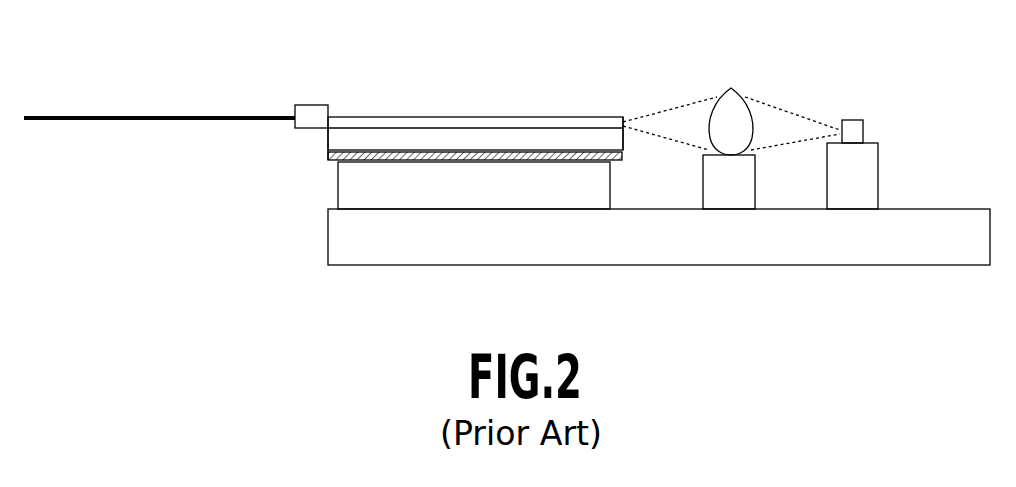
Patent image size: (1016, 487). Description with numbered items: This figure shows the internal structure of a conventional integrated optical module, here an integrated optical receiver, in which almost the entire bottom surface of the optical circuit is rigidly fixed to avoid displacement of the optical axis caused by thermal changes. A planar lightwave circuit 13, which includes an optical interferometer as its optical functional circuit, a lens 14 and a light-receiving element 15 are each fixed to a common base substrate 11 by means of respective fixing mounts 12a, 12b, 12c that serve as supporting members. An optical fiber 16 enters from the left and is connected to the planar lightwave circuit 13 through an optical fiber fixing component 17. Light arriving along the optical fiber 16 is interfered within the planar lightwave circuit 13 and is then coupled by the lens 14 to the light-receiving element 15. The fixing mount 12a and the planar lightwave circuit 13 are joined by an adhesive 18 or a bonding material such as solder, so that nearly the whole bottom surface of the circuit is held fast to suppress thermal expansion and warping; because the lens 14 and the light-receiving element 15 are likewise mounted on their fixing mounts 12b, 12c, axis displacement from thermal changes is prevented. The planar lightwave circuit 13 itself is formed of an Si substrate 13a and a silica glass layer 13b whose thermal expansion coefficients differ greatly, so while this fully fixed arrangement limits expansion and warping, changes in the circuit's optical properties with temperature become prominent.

The base substrate 11 is at (957, 209).
The fixing mount 12a is at (335, 193).
The fixing mount 12b is at (732, 187).
The fixing mount 12c is at (862, 187).
The planar lightwave circuit 13 is at (491, 170).
The Si substrate 13a is at (327, 142).
The silica glass layer 13b is at (610, 117).
The lens 14 is at (743, 90).
The light-receiving element 15 is at (855, 120).
The optical fiber 16 is at (172, 117).
The optical fiber fixing component 17 is at (316, 105).
The adhesive 18 is at (328, 155).